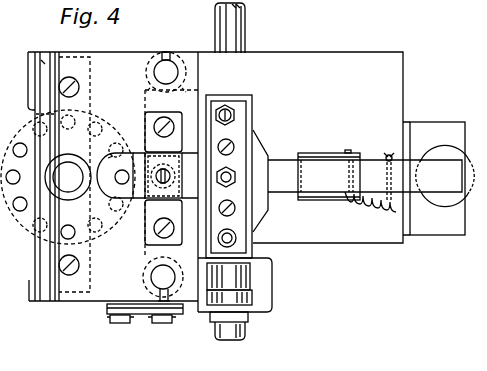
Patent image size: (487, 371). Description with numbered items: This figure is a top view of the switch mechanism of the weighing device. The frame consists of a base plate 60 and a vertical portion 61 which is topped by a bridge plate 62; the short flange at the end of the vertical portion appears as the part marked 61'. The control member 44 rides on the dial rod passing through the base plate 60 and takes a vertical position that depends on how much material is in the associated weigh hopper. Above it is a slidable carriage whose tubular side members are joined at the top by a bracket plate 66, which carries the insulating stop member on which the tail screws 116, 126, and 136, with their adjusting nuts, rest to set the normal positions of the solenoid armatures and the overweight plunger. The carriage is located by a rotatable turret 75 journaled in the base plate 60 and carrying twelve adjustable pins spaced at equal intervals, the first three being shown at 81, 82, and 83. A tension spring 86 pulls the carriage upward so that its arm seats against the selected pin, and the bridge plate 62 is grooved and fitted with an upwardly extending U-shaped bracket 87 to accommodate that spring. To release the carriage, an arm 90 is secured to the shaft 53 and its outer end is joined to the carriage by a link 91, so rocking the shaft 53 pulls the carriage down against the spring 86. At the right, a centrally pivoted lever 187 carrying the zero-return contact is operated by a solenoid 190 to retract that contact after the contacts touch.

The control member 44 is at (261, 143).
The shaft 53 is at (245, 337).
The base plate 60 is at (333, 243).
The vertical portion 61 is at (32, 176).
The clamp plate 61' is at (26, 81).
The bridge plate 62 is at (137, 53).
The bracket plate 66 is at (239, 95).
The rotatable turret 75 is at (30, 128).
The adjustable pin 81 is at (121, 175).
The adjustable pin 82 is at (107, 153).
The adjustable pin 83 is at (68, 177).
The tension spring 86 is at (180, 163).
The U-shaped bracket 87 is at (145, 128).
The arm 90 is at (200, 312).
The link 91 is at (138, 319).
The tail screw 116 is at (222, 233).
The tail screw 126 is at (222, 166).
The tail screw 136 is at (230, 121).
The lever 187 is at (387, 156).
The solenoid 190 is at (460, 160).